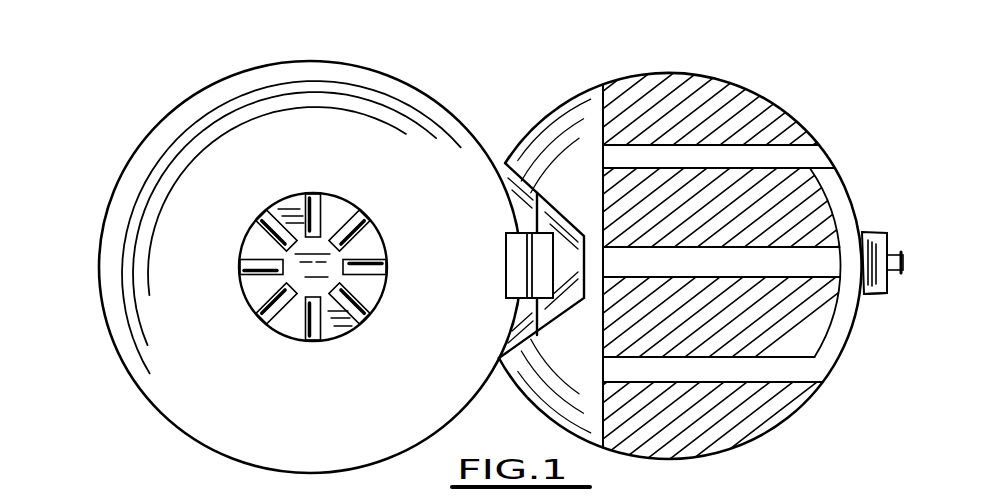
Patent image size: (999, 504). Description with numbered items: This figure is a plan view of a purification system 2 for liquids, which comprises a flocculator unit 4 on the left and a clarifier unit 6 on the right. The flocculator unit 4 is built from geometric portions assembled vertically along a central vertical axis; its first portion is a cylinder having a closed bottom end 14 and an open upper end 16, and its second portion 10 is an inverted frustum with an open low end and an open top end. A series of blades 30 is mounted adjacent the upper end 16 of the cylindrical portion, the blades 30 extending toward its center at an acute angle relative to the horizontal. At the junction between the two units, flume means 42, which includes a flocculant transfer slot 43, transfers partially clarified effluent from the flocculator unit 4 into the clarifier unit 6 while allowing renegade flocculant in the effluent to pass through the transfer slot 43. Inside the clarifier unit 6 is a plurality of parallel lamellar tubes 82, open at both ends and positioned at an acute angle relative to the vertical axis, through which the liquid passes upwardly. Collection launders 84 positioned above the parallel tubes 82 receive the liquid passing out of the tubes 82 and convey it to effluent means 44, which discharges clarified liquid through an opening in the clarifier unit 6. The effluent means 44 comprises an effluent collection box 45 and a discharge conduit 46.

The purification system 2 is at (112, 391).
The flocculator unit 4 is at (492, 133).
The clarifier unit 6 is at (782, 92).
The second portion 10 is at (272, 392).
The closed bottom end 14 is at (335, 215).
The open upper end 16 is at (385, 247).
The blades 30 is at (237, 262).
The flume means 42 is at (515, 257).
The flocculant transfer slot 43 is at (528, 281).
The effluent means 44 is at (888, 306).
The effluent collection box 45 is at (865, 232).
The discharge conduit 46 is at (893, 255).
The parallel tubes 82 is at (752, 410).
The collection launders 84 is at (790, 157).